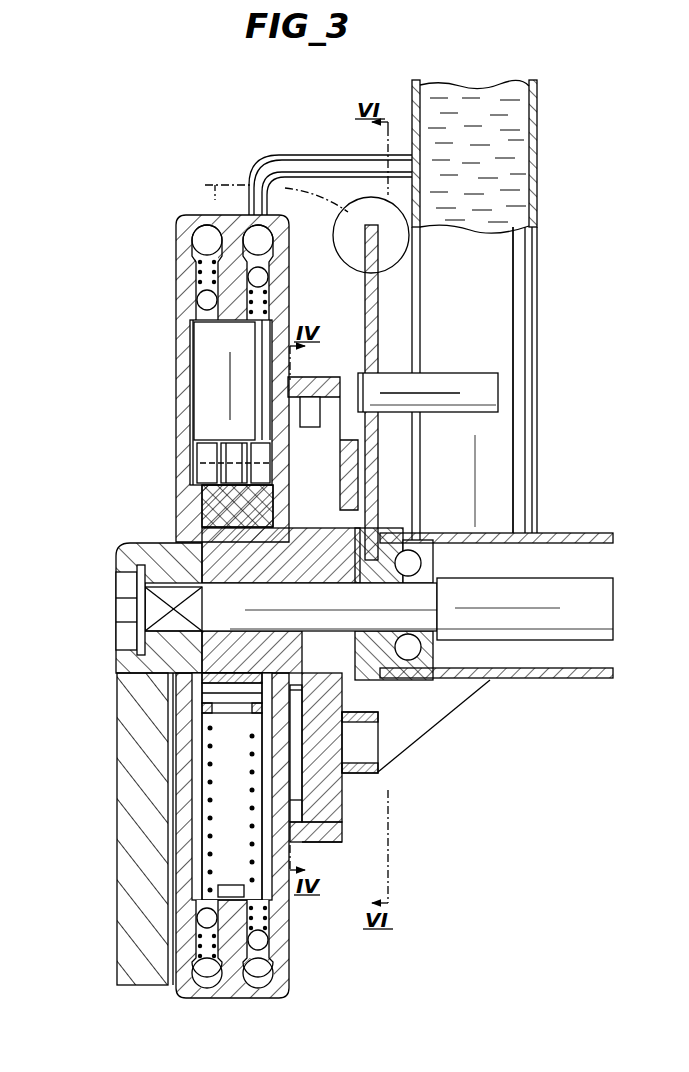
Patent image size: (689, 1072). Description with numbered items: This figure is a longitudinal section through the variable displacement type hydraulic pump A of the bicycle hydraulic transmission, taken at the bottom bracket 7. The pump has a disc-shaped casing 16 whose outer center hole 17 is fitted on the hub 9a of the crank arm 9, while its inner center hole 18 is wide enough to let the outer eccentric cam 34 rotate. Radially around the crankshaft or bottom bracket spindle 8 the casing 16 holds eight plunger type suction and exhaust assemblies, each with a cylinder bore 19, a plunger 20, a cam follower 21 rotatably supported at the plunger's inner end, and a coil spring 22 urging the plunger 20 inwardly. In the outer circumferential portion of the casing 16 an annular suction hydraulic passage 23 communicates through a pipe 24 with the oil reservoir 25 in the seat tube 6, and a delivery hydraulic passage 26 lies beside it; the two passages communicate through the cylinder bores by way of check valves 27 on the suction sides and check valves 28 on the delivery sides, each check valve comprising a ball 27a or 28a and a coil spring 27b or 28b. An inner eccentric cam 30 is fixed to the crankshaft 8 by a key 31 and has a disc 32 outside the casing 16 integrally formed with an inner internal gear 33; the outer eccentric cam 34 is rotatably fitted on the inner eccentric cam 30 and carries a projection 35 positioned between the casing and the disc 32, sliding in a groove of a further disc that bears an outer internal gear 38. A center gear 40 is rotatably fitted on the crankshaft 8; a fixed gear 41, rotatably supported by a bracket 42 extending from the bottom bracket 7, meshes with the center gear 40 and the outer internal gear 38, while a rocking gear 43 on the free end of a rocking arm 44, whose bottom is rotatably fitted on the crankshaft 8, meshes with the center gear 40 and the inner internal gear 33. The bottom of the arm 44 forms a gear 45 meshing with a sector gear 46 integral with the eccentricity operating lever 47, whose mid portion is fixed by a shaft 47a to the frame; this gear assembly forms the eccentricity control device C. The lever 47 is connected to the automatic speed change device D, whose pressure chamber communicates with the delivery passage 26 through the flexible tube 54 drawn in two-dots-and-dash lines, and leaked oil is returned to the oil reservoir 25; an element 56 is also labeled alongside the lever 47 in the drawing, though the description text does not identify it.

The seat tube 6 is at (537, 160).
The bottom bracket 7 is at (596, 678).
The crankshaft or bottom bracket spindle 8 is at (548, 635).
The crank arm 9 is at (140, 770).
The hub of the crank arm 9a is at (192, 690).
The casing 16 is at (176, 335).
The outer center hole 17 is at (270, 552).
The inner center hole 18 is at (378, 745).
The cylinder bore 19 is at (200, 420).
The plunger 20 is at (194, 430).
The cam follower 21 is at (225, 462).
The coil spring 22 is at (202, 800).
The suction hydraulic passage 23 is at (256, 214).
The pipe 24 is at (292, 156).
The oil reservoir 25 is at (452, 92).
The delivery hydraulic passage 26 is at (200, 239).
The check valve on suction side 27 is at (264, 276).
The ball 27a is at (264, 958).
The coil spring 27b is at (266, 928).
The check valve on delivery side 28 is at (200, 300).
The ball 28a is at (200, 918).
The coil spring 28b is at (192, 952).
The inner eccentric cam 30 is at (170, 562).
The key 31 is at (134, 592).
The disc 32 is at (345, 785).
The inner internal gear 33 is at (342, 838).
The outer eccentric cam 34 is at (212, 500).
The projection 35 is at (272, 412).
The outer internal gear 38 is at (330, 392).
The center gear 40 is at (460, 500).
The fixed gear 41 is at (342, 800).
The bracket 42 is at (430, 706).
The rocking gear 43 is at (470, 425).
The rocking arm 44 is at (460, 470).
The gear 45 is at (400, 690).
The sector gear 46 is at (420, 527).
The eccentricity operating lever 47 is at (513, 322).
The shaft 47a is at (500, 372).
The flexible tube 54 is at (207, 184).
The lever 56 is at (363, 294).
The variable displacement type hydraulic pump A is at (176, 194).
The eccentricity control device C is at (330, 850).
The automatic speed change device D is at (352, 192).